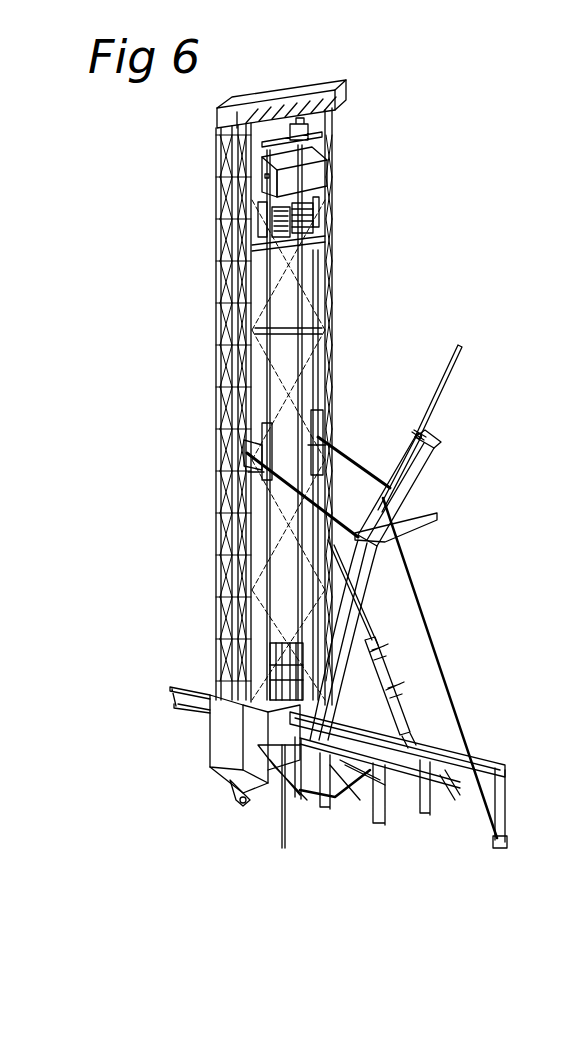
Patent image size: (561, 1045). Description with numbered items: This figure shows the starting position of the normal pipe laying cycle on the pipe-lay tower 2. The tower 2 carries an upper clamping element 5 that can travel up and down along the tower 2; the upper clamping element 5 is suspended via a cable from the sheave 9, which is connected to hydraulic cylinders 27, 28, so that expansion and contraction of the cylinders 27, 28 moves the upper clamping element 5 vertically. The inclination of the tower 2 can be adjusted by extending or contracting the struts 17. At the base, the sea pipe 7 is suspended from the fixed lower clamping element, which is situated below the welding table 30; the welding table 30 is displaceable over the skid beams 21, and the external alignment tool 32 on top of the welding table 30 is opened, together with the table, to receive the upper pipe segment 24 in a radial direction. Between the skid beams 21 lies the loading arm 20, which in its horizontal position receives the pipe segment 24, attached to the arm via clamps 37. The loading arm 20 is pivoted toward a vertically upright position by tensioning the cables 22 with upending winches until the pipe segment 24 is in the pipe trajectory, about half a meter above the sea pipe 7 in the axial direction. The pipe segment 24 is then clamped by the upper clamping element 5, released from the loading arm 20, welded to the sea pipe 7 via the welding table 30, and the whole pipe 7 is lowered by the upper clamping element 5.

The pipe-lay tower 2 is at (201, 290).
The upper clamping element 5 is at (313, 226).
The sea pipe 7 is at (282, 827).
The sheave 9 is at (318, 170).
The struts 17 is at (400, 715).
The loading arm 20 is at (425, 477).
The skid beams 21 is at (485, 773).
The cables 22 is at (350, 457).
The pipe segment 24 is at (443, 392).
The hydraulic cylinder 27 is at (313, 418).
The hydraulic cylinder 28 is at (248, 438).
The welding table 30 is at (262, 760).
The external alignment tool 32 is at (296, 648).
The clamps 37 is at (417, 435).